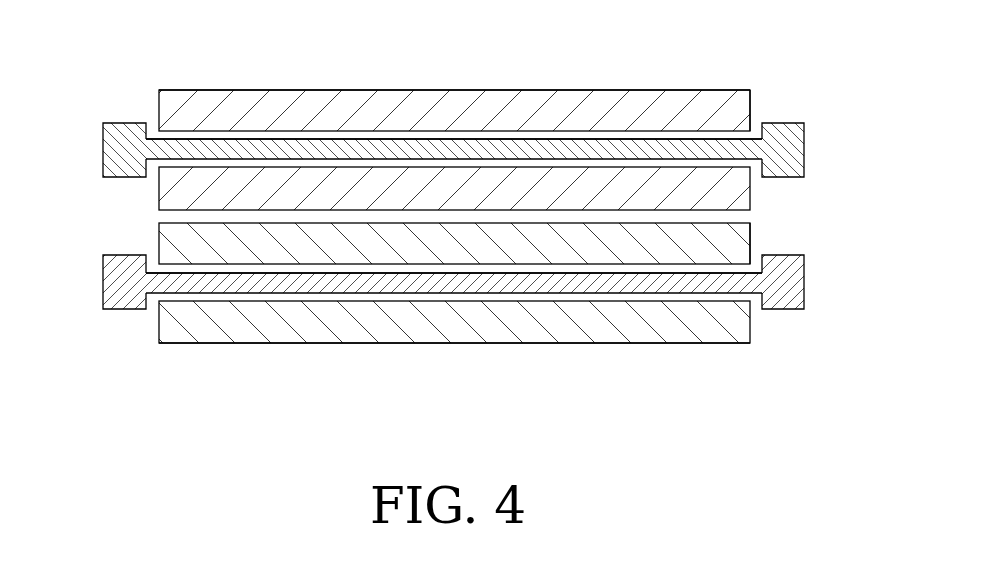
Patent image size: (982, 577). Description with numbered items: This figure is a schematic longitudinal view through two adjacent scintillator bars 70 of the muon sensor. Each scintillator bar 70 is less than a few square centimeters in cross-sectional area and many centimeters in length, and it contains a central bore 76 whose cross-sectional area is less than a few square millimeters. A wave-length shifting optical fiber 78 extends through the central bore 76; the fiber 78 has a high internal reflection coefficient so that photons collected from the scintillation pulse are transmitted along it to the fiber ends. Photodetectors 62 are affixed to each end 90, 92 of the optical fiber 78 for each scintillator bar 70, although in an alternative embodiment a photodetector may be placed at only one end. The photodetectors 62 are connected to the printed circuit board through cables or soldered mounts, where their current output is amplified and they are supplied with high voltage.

The photodetector 62 is at (103, 148).
The scintillator bar 70 is at (488, 90).
The central bore 76 is at (276, 152).
The wave-length shifting optical fiber 78 is at (683, 137).
The end 90 is at (158, 103).
The end 92 is at (750, 102).